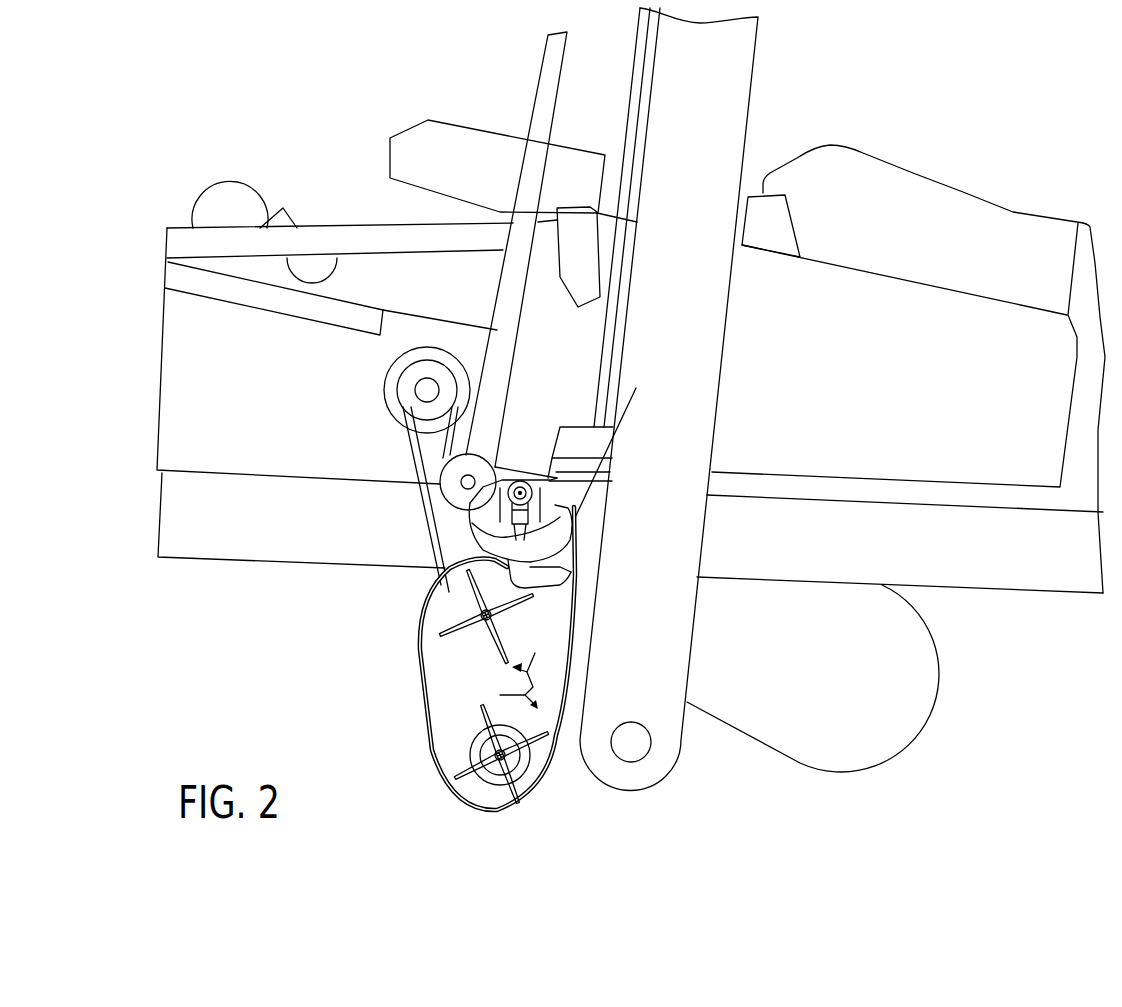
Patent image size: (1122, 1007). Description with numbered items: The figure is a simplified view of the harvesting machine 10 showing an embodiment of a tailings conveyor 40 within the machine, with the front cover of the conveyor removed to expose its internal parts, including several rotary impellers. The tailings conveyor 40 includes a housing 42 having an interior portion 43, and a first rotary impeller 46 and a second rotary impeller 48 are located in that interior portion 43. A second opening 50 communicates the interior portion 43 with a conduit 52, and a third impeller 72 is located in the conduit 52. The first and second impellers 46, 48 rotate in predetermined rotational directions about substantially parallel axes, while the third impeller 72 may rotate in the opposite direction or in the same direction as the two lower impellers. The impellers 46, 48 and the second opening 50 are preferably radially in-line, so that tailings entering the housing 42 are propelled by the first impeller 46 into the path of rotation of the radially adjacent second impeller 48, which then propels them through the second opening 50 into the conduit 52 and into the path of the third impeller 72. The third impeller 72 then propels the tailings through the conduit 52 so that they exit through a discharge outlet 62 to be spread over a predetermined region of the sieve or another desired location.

The apparatus 10 is at (278, 646).
The tailings conveyor 40 is at (481, 665).
The housing 42 is at (418, 708).
The interior portion 43 is at (438, 660).
The first rotary impeller 46 is at (452, 757).
The second rotary impeller 48 is at (512, 626).
The second opening 50 is at (571, 577).
The conduit 52 is at (592, 510).
The discharge outlet 62 is at (618, 442).
The third impeller 72 is at (540, 498).